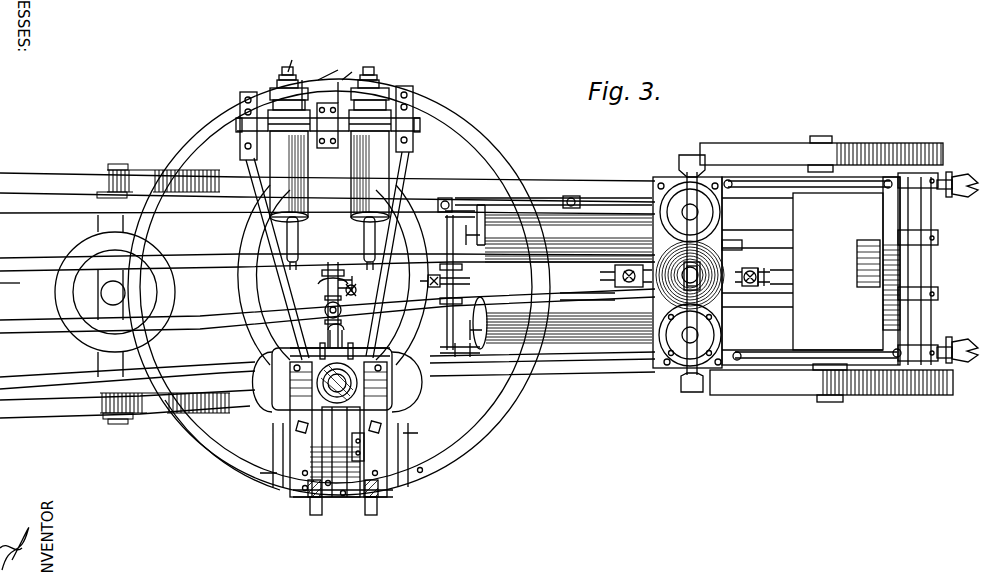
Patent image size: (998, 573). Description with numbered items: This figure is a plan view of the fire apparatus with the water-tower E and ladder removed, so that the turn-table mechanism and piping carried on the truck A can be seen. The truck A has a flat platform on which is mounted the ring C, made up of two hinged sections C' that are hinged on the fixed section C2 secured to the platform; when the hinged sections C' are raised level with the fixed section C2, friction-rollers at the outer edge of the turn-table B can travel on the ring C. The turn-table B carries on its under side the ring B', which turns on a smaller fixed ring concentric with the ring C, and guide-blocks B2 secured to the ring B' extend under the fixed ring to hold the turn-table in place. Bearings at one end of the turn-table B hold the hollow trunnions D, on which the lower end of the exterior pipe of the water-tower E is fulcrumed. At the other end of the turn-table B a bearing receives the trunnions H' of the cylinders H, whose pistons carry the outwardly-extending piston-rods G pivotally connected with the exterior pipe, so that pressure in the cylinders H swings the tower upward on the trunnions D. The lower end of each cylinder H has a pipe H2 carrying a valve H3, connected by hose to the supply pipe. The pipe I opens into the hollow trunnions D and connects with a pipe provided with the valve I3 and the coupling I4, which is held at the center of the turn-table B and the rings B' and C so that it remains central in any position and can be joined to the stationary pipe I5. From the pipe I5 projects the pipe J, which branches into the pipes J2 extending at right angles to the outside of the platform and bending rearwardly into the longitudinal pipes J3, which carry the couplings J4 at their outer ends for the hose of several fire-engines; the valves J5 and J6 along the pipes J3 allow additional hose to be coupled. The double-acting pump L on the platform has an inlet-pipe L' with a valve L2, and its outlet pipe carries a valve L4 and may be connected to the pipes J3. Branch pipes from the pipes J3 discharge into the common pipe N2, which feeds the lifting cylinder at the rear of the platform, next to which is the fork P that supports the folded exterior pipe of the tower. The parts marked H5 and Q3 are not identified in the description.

The truck A is at (10, 292).
The turn-table B is at (337, 267).
The ring B' is at (319, 275).
The guide-blocks B2 is at (410, 134).
The ring C is at (349, 287).
The hinged sections C' is at (222, 445).
The fixed section C2 is at (125, 285).
The trunnions D is at (270, 408).
The water-tower E is at (337, 383).
The piston-rods G is at (364, 233).
The cylinders H is at (444, 208).
The trunnions H' is at (345, 242).
The pipe H2 is at (367, 70).
The valve H3 is at (350, 72).
The pipe H5 is at (289, 70).
The pipe I is at (341, 438).
The valve I3 is at (322, 304).
The coupling I4 is at (333, 264).
The stationary pipe I5 is at (326, 333).
The pipe J is at (356, 288).
The pipes J2 is at (443, 284).
The pipes J3 is at (462, 207).
The couplings J4 is at (958, 180).
The valve J5 is at (446, 197).
The valve J6 is at (574, 196).
The double-acting pump L is at (757, 232).
The inlet-pipe L' is at (757, 310).
The valve L2 is at (617, 276).
The valve L4 is at (640, 290).
The common pipe N2 is at (838, 333).
The fork P is at (884, 243).
The block Q3 is at (860, 276).